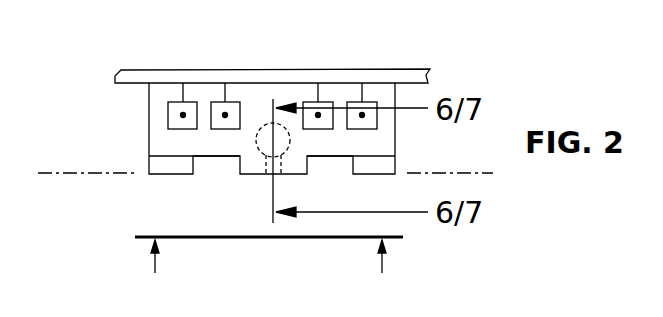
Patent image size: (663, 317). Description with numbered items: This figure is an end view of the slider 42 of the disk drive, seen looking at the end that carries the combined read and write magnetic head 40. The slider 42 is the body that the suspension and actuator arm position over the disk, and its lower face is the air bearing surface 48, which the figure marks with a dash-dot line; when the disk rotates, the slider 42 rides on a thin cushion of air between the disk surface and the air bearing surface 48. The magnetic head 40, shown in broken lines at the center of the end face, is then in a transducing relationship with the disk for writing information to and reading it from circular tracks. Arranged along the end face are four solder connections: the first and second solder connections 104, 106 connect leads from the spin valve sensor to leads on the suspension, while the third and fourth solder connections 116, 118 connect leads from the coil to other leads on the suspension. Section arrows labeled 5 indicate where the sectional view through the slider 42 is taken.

The slider 42 is at (148, 115).
The first solder connection 104 is at (168, 103).
The third solder connection 116 is at (212, 103).
The fourth solder connection 118 is at (305, 101).
The second solder connection 106 is at (349, 101).
The magnetic head 40 is at (258, 152).
The air bearing surface 48 is at (65, 177).
The section view 5 indicator 5 is at (269, 272).